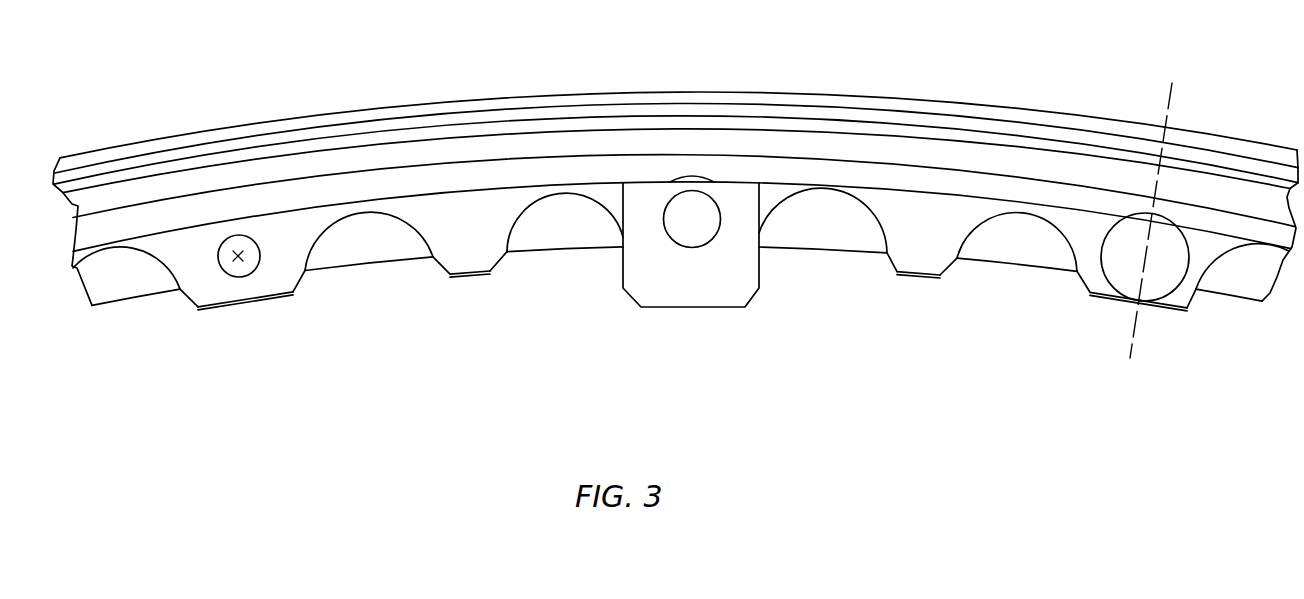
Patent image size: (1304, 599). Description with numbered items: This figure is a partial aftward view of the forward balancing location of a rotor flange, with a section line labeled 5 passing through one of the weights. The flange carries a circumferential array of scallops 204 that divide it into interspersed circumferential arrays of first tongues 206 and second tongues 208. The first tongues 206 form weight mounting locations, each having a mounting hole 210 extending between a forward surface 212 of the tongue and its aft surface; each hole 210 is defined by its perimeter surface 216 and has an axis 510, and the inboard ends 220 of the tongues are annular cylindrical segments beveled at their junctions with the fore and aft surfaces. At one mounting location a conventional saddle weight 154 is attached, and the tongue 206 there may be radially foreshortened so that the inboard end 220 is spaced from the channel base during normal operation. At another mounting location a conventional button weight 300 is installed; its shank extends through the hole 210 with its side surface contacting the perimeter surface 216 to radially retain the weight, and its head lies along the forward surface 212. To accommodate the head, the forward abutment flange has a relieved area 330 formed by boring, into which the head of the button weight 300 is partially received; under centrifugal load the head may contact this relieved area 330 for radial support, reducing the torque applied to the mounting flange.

The saddle weight 154 is at (690, 325).
The scallops 204 is at (561, 264).
The first tongues 206 is at (288, 283).
The second tongues 208 is at (467, 248).
The mounting apertures/holes 210 is at (241, 270).
The forward surface 212 is at (195, 277).
The perimeter surfaces 216 is at (233, 268).
The inboard ends 220 is at (268, 302).
The button weight 300 is at (1155, 320).
The relieved areas 330 is at (229, 214).
The axis 510 is at (238, 242).
The section line 5- 5 is at (1078, 352).